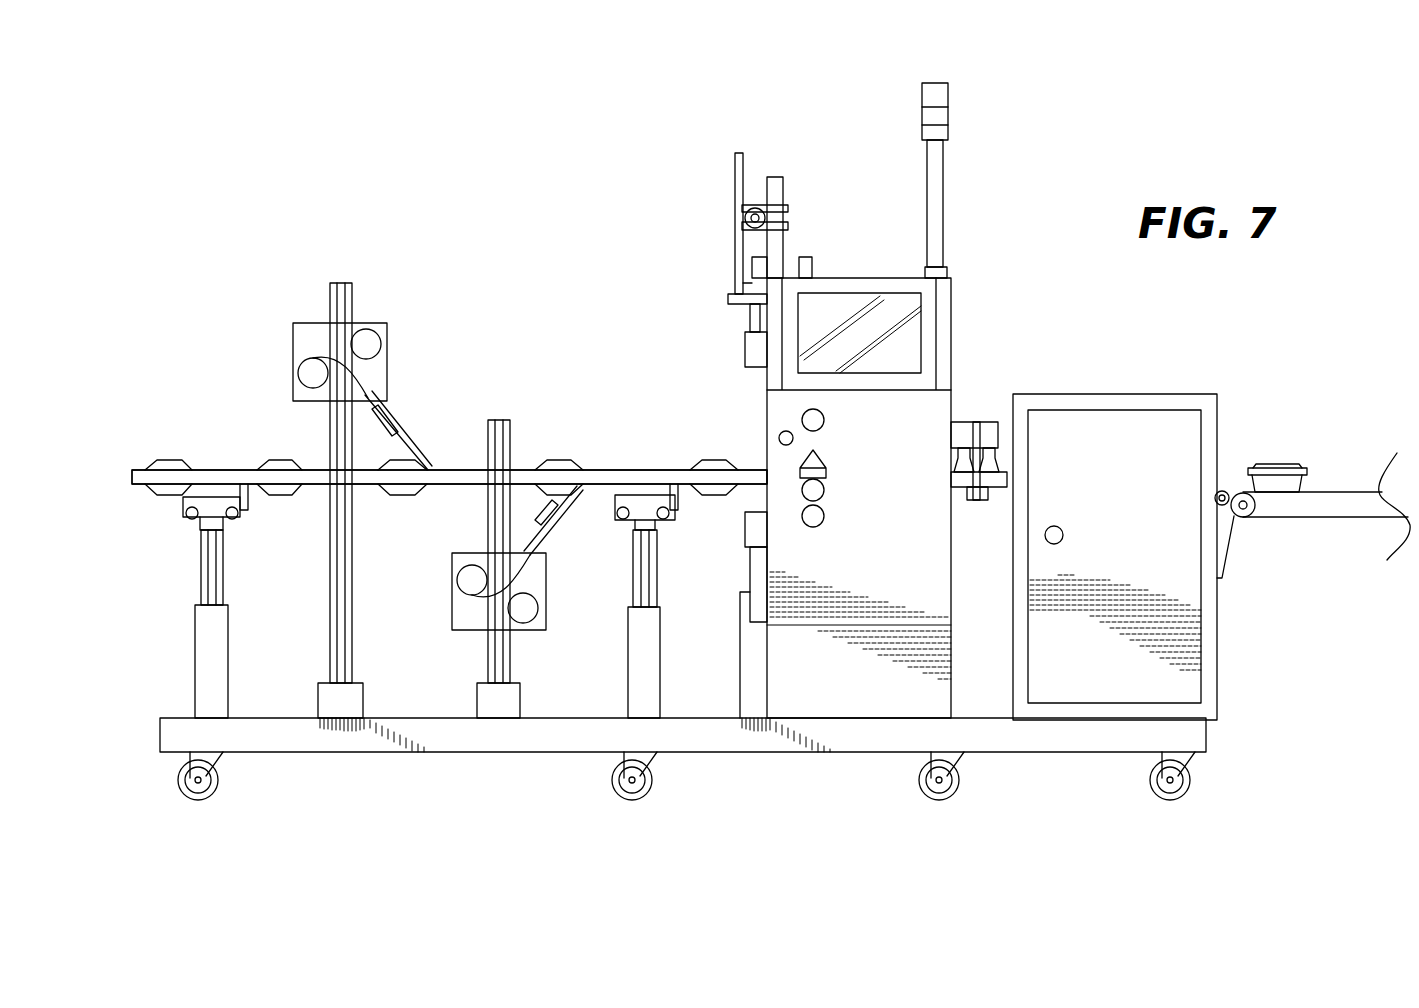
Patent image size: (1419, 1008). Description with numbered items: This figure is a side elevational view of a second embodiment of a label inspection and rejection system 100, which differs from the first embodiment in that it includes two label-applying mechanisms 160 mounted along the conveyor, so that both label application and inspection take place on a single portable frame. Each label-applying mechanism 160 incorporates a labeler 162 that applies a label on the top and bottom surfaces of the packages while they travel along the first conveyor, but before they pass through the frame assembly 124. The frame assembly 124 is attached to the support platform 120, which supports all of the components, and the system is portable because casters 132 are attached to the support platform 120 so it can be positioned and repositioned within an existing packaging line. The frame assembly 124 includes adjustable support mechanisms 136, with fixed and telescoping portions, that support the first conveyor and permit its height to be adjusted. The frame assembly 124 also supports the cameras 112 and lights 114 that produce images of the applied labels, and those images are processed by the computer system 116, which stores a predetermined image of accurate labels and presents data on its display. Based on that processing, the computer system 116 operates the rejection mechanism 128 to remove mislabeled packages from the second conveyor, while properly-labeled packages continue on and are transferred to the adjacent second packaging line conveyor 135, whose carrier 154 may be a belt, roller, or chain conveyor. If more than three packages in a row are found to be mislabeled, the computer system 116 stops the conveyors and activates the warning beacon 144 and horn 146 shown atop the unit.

The label inspection and rejection system 100 is at (598, 296).
The cameras 112 is at (757, 320).
The lights 114 is at (755, 348).
The computer system 116 is at (958, 350).
The support platform 120 is at (1015, 752).
The frame assembly 124 is at (730, 198).
The rejection mechanism 128 is at (1133, 393).
The casters 132 is at (198, 800).
The second packaging line conveyor 135 is at (1338, 490).
The adjustable support mechanisms 136 is at (650, 638).
The warning beacon 144 is at (924, 112).
The horn 146 is at (924, 136).
The carrier 154 is at (1345, 510).
The label-applying mechanisms 160 is at (418, 328).
The labeler 162 is at (440, 402).